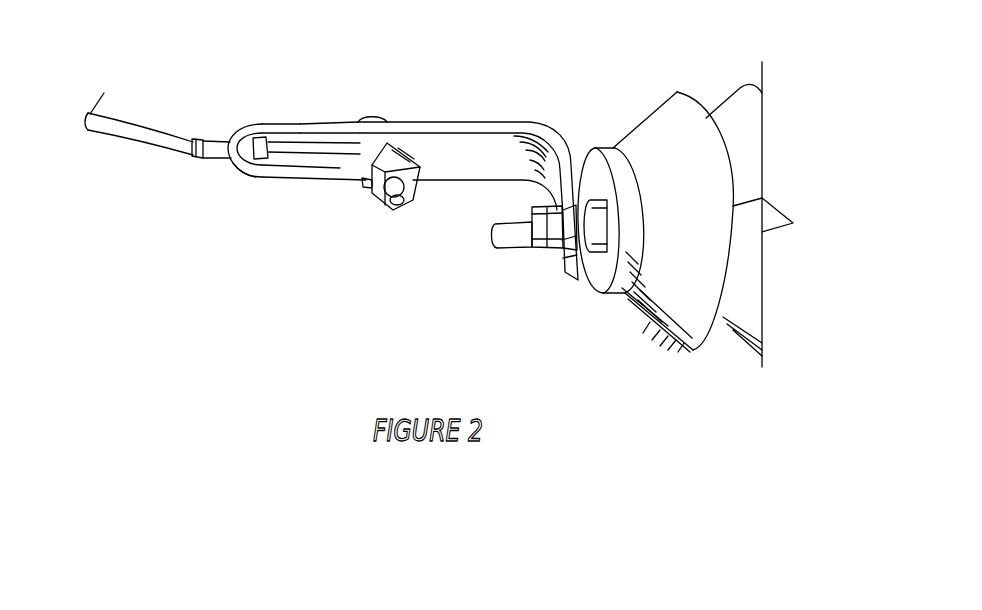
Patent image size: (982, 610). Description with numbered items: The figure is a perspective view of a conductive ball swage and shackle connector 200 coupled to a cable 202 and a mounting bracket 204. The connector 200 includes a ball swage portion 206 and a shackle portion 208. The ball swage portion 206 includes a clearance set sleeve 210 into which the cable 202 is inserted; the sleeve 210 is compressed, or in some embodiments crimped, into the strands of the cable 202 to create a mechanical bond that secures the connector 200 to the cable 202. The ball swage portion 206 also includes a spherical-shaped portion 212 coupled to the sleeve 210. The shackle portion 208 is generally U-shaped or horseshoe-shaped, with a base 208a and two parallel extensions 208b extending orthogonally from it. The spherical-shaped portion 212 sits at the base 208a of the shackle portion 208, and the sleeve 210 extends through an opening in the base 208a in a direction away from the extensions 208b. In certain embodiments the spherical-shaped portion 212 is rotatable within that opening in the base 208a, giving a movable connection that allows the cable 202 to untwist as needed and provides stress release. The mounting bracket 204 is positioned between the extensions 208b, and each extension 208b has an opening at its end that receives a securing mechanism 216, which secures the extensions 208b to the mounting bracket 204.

The conductive ball swage and shackle connector 200 is at (289, 174).
The cable 202 is at (128, 137).
The mounting bracket 204 is at (483, 143).
The ball swage portion 206 is at (234, 167).
The shackle portion 208 is at (331, 175).
The base 208a is at (237, 137).
The extensions 208b is at (318, 138).
The clearance set sleeve 210 is at (197, 160).
The spherical-shaped portion 212 is at (260, 140).
The securing mechanism 216 is at (400, 212).